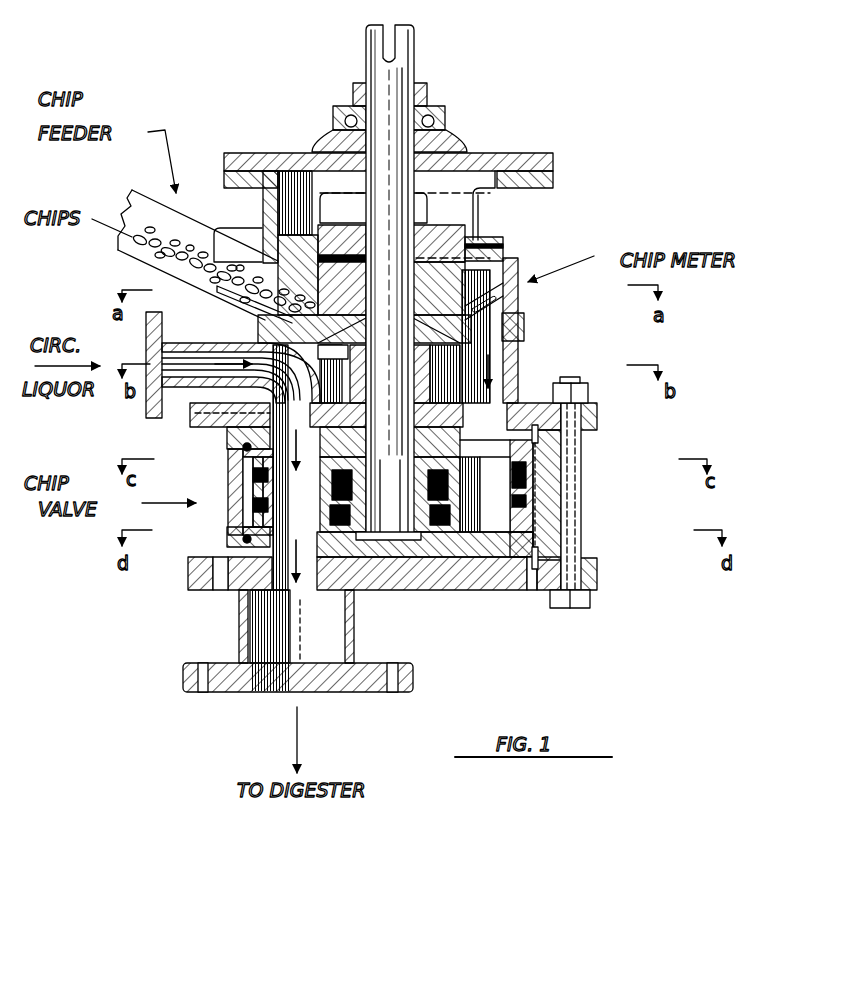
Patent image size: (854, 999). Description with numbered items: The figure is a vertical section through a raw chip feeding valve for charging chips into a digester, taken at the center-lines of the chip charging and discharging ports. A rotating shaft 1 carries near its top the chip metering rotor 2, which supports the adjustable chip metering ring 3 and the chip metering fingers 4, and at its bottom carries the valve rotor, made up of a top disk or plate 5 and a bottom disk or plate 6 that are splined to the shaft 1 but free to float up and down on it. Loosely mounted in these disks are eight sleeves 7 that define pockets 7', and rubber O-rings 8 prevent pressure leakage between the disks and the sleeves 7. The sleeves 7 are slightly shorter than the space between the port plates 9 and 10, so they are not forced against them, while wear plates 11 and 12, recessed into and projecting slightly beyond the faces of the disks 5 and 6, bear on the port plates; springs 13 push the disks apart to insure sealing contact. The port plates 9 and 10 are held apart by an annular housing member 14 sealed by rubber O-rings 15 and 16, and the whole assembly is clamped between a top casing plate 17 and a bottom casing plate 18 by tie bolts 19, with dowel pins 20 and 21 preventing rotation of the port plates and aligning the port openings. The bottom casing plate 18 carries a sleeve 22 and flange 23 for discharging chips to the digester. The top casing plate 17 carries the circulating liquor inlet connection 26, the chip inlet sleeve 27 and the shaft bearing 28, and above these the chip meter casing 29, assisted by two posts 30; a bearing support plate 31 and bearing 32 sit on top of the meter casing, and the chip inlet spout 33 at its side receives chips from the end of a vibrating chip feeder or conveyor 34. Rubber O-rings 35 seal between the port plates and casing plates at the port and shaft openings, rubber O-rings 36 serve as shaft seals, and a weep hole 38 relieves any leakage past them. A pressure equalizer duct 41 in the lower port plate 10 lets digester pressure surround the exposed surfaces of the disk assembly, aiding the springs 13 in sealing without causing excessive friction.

The rotating shaft 1 is at (414, 44).
The chip metering rotor 2 is at (478, 232).
The adjustable chip metering ring 3 is at (500, 241).
The chip metering fingers 4 is at (470, 299).
The top disk or plate 5 is at (553, 469).
The bottom disk or plate 6 is at (540, 507).
The sleeves 7 is at (468, 492).
The pockets 7' is at (439, 486).
The rubber O-rings 8 is at (253, 506).
The port plate 9 is at (548, 437).
The port plate 10 is at (553, 547).
The wear plate 11 is at (227, 438).
The wear plate 12 is at (233, 540).
The springs 13 is at (455, 545).
The annular housing member 14 is at (228, 486).
The rubber O-ring 15 is at (243, 454).
The rubber O-ring 16 is at (240, 540).
The top casing plate 17 is at (597, 415).
The bottom casing plate 18 is at (597, 573).
The tie bolts 19 is at (590, 604).
The dowel pin 20 is at (574, 470).
The dowel pin 21 is at (538, 568).
The sleeve 22 is at (240, 622).
The flange 23 is at (184, 679).
The circulating liquor inlet connection 26 is at (218, 338).
The chip inlet sleeve 27 is at (518, 358).
The shaft bearing 28 is at (430, 385).
The chip meter casing 29 is at (525, 319).
The posts 30 is at (320, 366).
The bearing support plate 31 is at (540, 153).
The bearing 32 is at (445, 116).
The chip inlet spout 33 is at (217, 293).
The vibrating chip feeder or conveyor 34 is at (142, 260).
The rubber O-rings 35 is at (290, 596).
The rubber O-rings 36 is at (370, 446).
The weep hole 38 is at (215, 405).
The pressure equalizer duct 41 is at (240, 563).